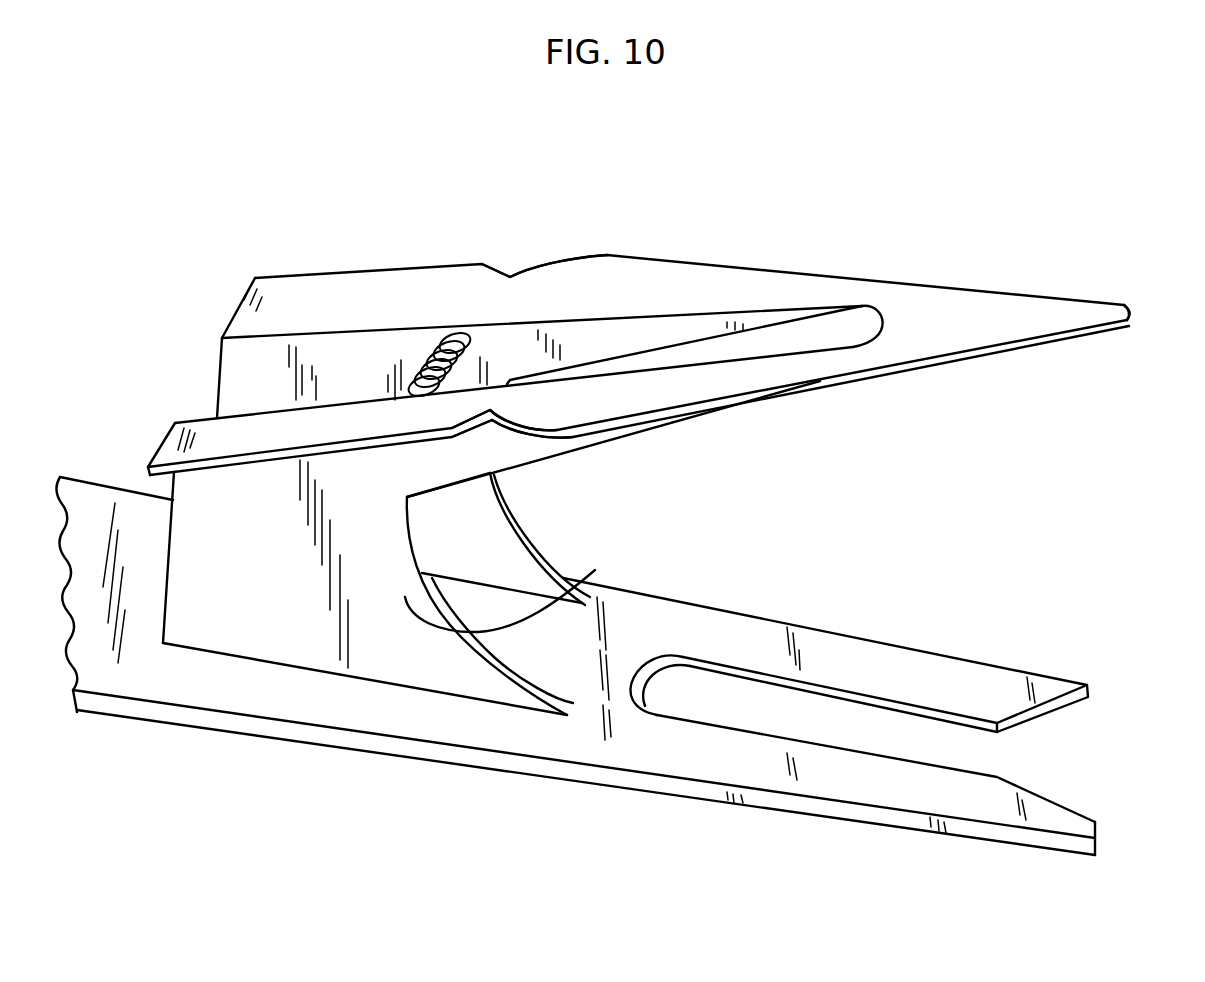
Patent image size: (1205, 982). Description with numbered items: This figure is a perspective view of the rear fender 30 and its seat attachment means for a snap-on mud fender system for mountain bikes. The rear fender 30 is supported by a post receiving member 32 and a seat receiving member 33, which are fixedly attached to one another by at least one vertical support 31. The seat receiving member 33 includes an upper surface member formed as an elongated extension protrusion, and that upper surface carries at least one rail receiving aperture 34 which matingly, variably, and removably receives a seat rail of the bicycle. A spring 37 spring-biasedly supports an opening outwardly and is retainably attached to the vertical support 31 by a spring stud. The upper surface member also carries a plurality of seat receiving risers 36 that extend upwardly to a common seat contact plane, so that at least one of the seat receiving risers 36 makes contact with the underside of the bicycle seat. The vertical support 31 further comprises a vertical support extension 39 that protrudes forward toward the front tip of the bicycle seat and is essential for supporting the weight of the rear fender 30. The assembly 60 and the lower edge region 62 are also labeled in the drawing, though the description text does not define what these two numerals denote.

The rear fender 30 is at (88, 726).
The vertical support 31 is at (490, 527).
The post receiving member 32 is at (930, 673).
The seat receiving member 33 is at (266, 320).
The rail receiving aperture 34 is at (511, 276).
The seat receiving risers 36 is at (1131, 312).
The spring 37 is at (424, 355).
The vertical support extension 39 is at (495, 420).
The clip assembly 60 is at (917, 214).
The bottom edge of lower plate 62 is at (552, 768).